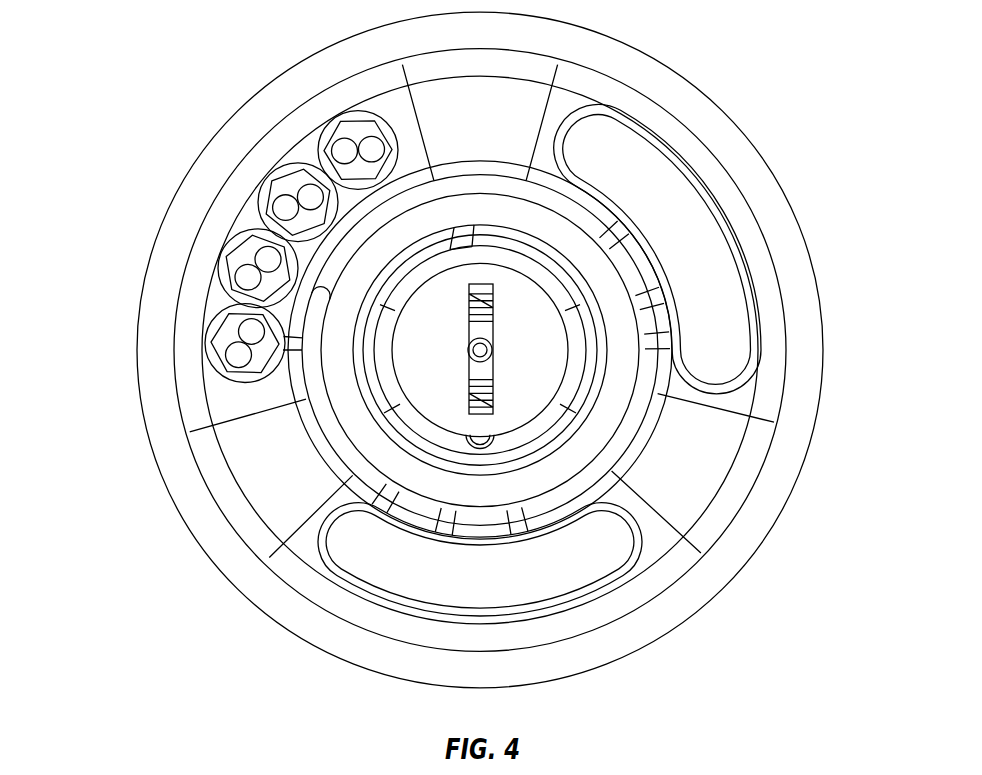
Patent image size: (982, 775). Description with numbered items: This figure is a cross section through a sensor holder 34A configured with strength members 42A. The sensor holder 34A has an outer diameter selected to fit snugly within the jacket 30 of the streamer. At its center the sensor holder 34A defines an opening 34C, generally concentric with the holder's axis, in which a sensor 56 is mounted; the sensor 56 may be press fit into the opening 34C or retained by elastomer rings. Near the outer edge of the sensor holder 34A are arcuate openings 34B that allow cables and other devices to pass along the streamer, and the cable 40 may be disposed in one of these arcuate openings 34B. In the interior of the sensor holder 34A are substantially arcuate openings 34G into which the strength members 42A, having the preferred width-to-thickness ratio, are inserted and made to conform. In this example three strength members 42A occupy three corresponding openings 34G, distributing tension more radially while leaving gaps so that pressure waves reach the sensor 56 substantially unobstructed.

The jacket 30 is at (673, 66).
The sensor holder 34A is at (745, 470).
The arcuate openings 34B is at (642, 148).
The opening 34C is at (568, 290).
The arcuate openings 34G is at (312, 381).
The cable 40 is at (285, 188).
The strength members 42A is at (608, 215).
The sensor 56 is at (553, 372).